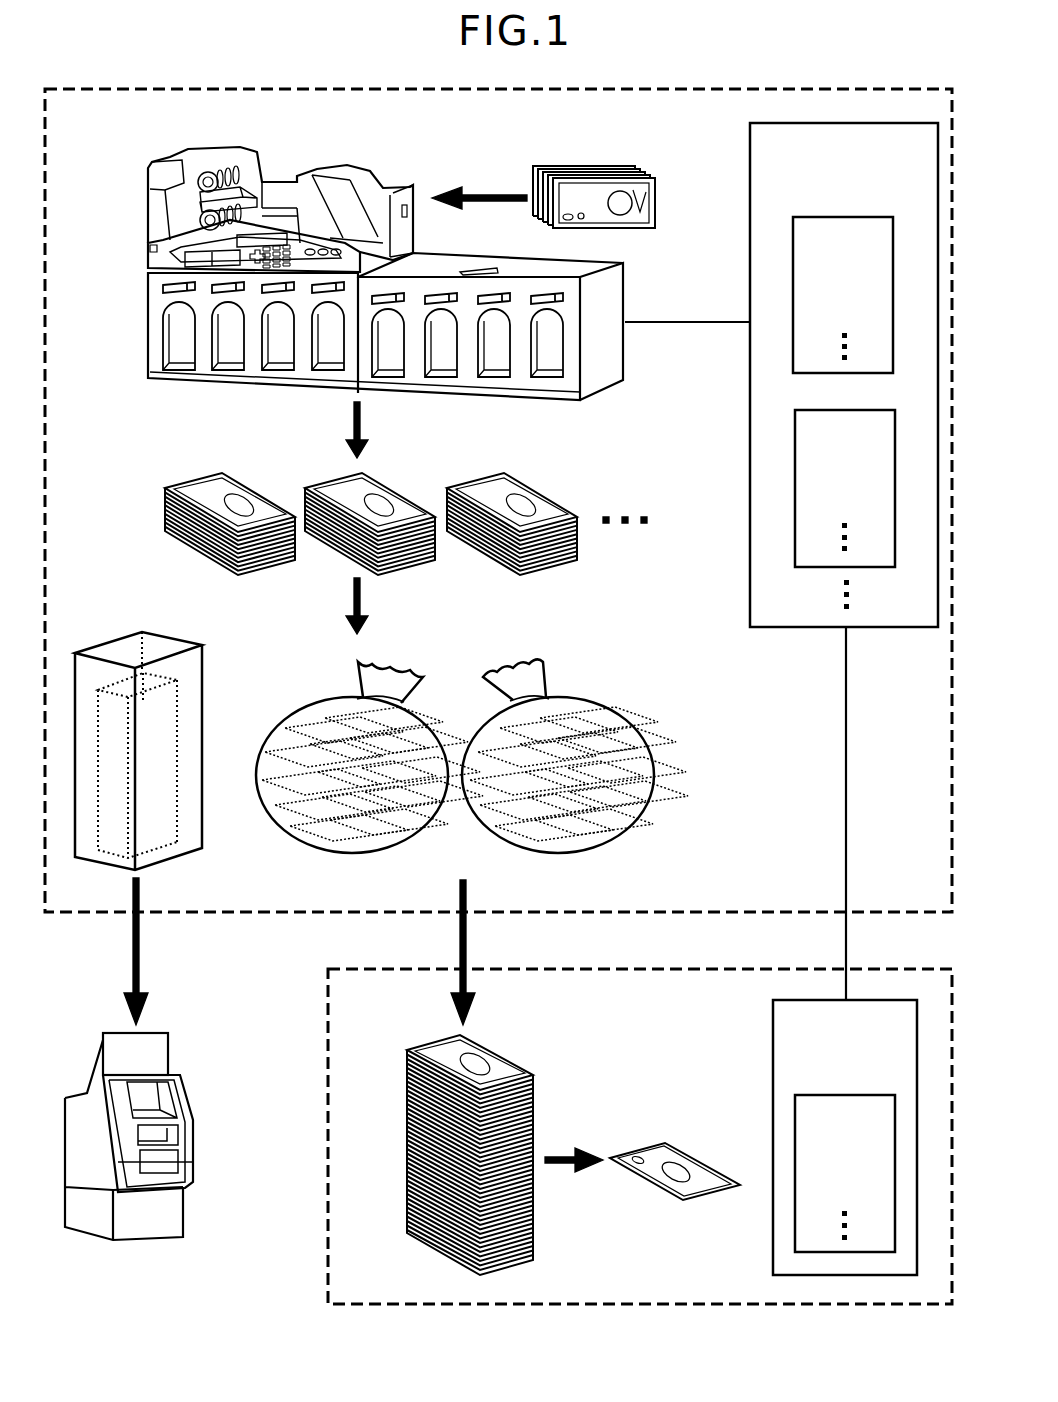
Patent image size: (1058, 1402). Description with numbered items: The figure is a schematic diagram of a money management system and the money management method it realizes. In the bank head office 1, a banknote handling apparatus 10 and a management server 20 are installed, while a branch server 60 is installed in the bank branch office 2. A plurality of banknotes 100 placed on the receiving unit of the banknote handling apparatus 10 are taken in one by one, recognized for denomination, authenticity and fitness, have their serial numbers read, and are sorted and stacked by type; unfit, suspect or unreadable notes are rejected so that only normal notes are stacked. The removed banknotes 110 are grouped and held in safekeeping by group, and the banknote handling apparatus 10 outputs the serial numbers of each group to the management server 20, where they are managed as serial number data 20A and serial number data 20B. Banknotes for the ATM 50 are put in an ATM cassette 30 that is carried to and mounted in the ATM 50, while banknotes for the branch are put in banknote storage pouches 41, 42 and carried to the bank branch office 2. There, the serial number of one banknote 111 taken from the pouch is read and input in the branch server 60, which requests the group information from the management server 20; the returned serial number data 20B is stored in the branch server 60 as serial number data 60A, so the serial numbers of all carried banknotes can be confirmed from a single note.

The bank head office 1 is at (926, 89).
The bank branch office 2 is at (925, 969).
The banknote handling apparatus 10 is at (207, 148).
The management server 20 is at (890, 123).
The serial number data 20A is at (838, 217).
The serial number data 20B is at (838, 410).
The ATM cassette 30 is at (123, 637).
The banknote storage pouch 41 is at (390, 664).
The banknote storage pouch 42 is at (552, 663).
The ATM 50 is at (183, 1082).
The branch server 60 is at (877, 1000).
The serial number data 60A is at (847, 1095).
The banknotes 100 is at (617, 174).
The removed banknotes 110 is at (205, 482).
The banknote 111 is at (658, 1145).